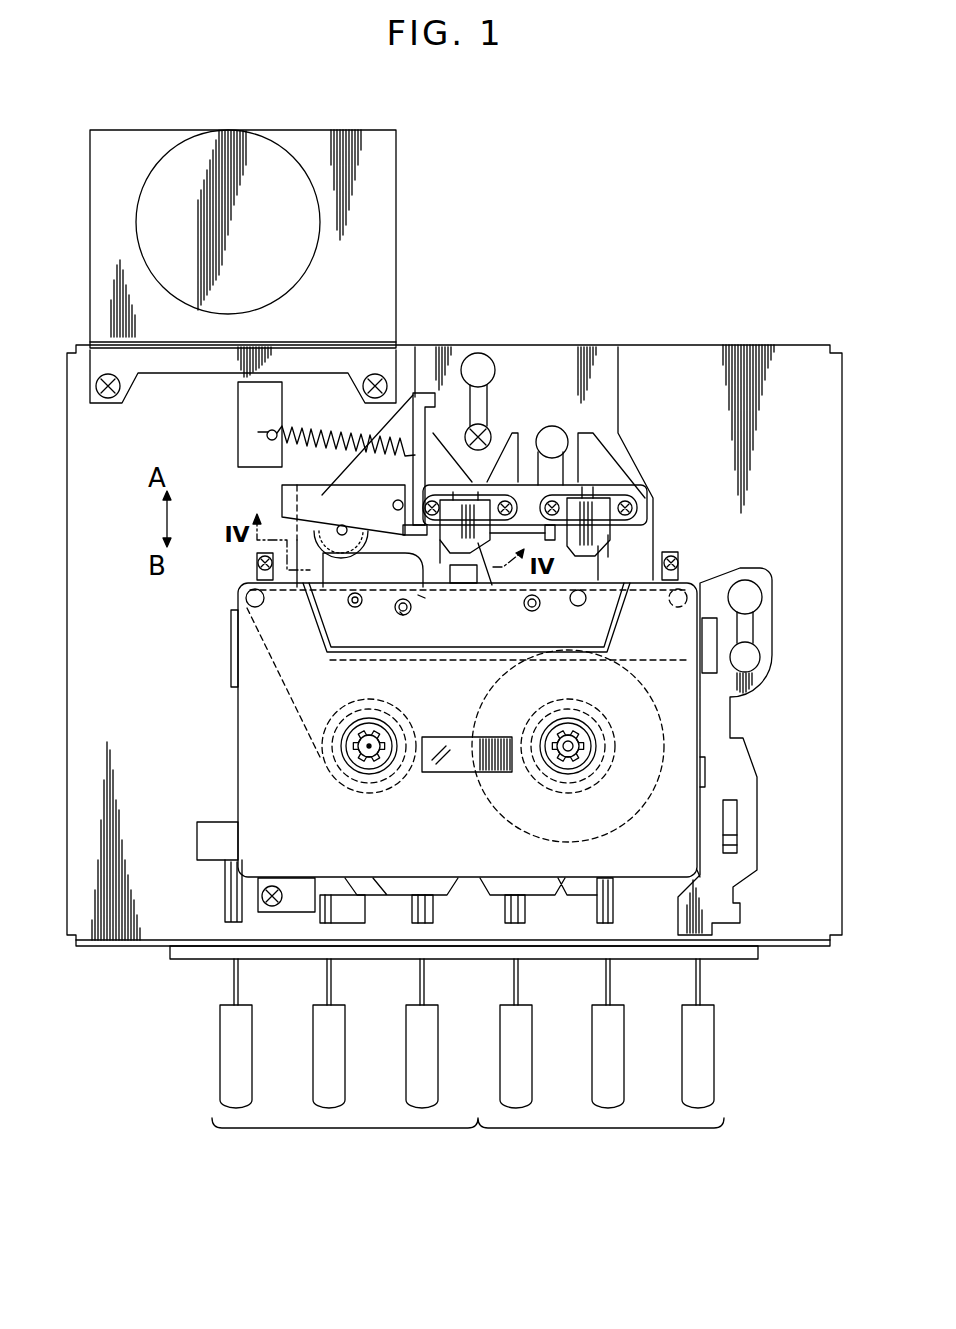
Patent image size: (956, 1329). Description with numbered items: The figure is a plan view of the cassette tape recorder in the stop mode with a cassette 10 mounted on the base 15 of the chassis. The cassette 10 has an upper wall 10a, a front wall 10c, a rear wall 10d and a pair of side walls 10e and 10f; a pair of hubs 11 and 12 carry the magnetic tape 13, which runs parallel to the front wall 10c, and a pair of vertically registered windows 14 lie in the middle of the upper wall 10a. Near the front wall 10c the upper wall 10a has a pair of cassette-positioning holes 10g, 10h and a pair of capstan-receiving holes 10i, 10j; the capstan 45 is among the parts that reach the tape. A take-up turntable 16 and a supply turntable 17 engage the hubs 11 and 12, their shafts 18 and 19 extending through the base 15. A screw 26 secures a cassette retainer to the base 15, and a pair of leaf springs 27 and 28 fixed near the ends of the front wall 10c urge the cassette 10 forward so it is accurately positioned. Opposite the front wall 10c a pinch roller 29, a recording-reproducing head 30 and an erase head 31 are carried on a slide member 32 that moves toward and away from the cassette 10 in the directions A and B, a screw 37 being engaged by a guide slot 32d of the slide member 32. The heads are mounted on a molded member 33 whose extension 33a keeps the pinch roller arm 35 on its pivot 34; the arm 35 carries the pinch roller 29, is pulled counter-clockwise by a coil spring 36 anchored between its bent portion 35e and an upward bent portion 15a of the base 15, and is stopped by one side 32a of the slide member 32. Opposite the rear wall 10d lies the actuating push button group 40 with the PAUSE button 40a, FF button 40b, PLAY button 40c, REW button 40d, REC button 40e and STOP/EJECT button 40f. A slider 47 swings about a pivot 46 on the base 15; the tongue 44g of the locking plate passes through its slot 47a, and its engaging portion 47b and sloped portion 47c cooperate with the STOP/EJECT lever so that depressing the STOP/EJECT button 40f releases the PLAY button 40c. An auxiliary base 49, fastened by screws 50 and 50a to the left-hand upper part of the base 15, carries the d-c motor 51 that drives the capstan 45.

The cassette 10 is at (234, 599).
The upper wall 10a is at (258, 788).
The front wall 10c is at (423, 600).
The rear wall 10d is at (468, 880).
The side wall 10e is at (237, 725).
The side wall 10f is at (703, 714).
The cassette-positioning hole 10g is at (405, 616).
The cassette-positioning hole 10h is at (532, 612).
The capstan-receiving hole 10i is at (400, 608).
The capstan-receiving hole 10j is at (586, 602).
The hub 11 is at (378, 770).
The hub 12 is at (556, 768).
The magnetic tape 13 is at (480, 608).
The windows 14 is at (457, 772).
The base 15 is at (842, 624).
The upward bent portion 15a is at (262, 432).
The take-up turntable 16 is at (378, 735).
The supply turntable 17 is at (575, 735).
The shaft 18 is at (360, 748).
The shaft 19 is at (574, 748).
The screw 26 is at (270, 906).
The leaf spring 27 is at (257, 565).
The leaf spring 28 is at (678, 565).
The pinch roller 29 is at (338, 530).
The recording-reproducing head 30 is at (474, 558).
The erase head 31 is at (600, 538).
The slide member 32 is at (619, 398).
The side of slide member 32a is at (322, 480).
The guide slot 32d is at (484, 397).
The molded member 33 is at (530, 495).
The extension 33a is at (405, 556).
The pivot 34 is at (400, 505).
The pinch roller arm 35 is at (283, 498).
The bent portion 35e is at (373, 500).
The coil spring 36 is at (343, 446).
The screw 37 is at (485, 428).
The actuating push button group 40 is at (488, 1062).
The PAUSE button 40a is at (256, 1016).
The FF button 40b is at (348, 1016).
The PLAY button 40c is at (441, 1016).
The REW button 40d is at (535, 1016).
The REC button 40e is at (627, 1016).
The STOP/EJECT button 40f is at (717, 1016).
The tongue 44g is at (737, 845).
The capstan 45 is at (352, 603).
The pivot 46 is at (752, 658).
The slider 47 is at (738, 748).
The slot 47a is at (737, 816).
The engaging portion 47b is at (697, 873).
The sloped portion 47c is at (697, 880).
The auxiliary base 49 is at (390, 296).
The screw 50 is at (123, 389).
The screw 50a is at (365, 392).
The d-c motor 51 is at (272, 147).